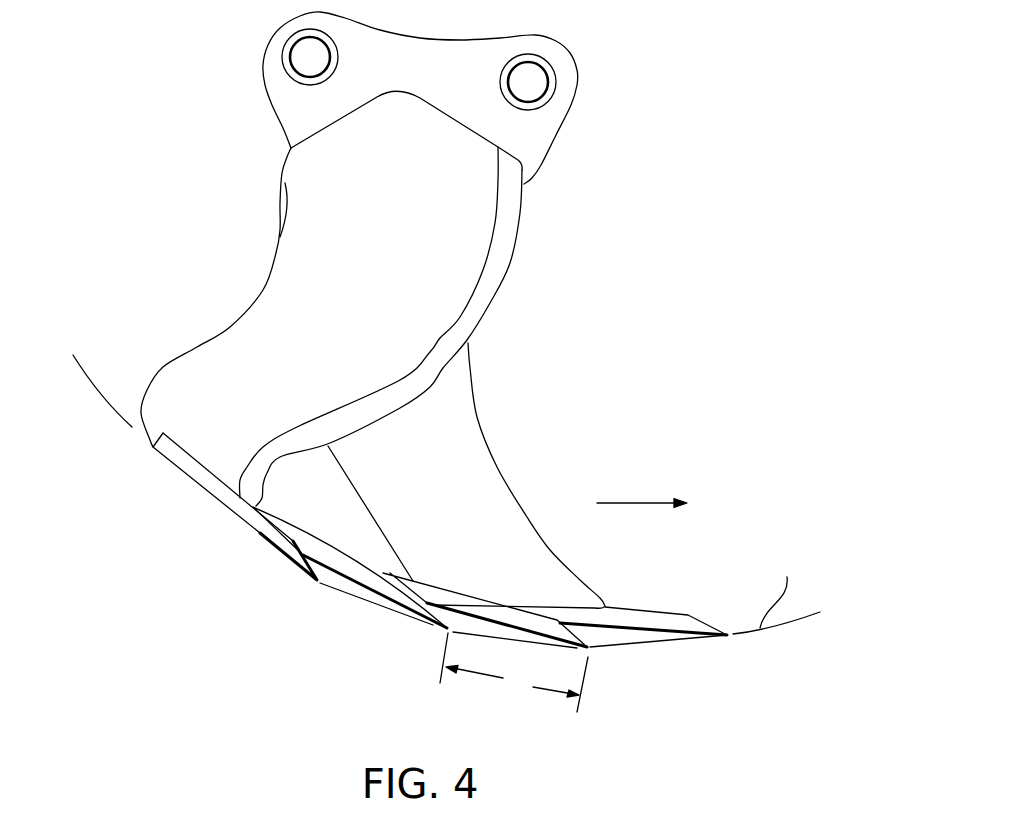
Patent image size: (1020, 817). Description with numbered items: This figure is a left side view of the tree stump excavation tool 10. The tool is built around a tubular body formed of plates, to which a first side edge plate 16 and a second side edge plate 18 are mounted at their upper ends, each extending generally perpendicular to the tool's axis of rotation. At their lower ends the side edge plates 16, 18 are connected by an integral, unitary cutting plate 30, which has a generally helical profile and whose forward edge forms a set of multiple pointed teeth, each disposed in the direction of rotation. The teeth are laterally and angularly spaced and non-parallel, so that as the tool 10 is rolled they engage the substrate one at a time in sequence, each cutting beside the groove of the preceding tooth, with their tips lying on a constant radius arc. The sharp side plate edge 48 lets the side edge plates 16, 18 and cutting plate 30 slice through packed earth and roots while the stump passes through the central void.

The tree stump excavation tool 10 is at (631, 426).
The first side edge plate 16 is at (380, 249).
The second side edge plate 18 is at (432, 512).
The cutting plate 30 is at (198, 473).
The side plate edge 48 is at (498, 255).